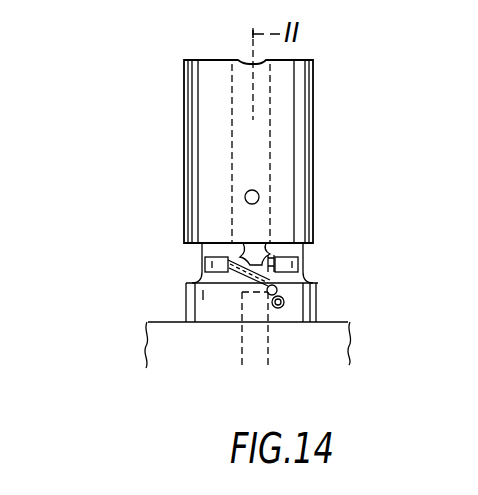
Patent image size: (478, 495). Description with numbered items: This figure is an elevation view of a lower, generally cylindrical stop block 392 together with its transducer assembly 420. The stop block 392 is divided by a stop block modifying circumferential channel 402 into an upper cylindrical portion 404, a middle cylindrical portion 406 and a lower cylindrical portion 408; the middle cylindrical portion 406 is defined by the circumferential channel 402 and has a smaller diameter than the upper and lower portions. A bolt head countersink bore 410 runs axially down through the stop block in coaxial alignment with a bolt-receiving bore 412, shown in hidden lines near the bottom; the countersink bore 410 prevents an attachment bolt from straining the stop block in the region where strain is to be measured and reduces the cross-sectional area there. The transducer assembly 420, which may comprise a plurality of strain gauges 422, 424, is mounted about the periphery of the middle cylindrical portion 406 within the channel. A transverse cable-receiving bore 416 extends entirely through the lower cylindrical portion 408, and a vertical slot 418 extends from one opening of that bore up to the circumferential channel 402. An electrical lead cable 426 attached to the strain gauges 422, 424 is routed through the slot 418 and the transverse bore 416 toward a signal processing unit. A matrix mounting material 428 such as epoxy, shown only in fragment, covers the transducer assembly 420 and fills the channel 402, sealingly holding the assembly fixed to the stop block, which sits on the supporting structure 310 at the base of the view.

The stop block 392 is at (339, 99).
The upper cylindrical portion 404 is at (313, 145).
The bolt head countersink bore 410 is at (232, 137).
The circumferential channel 402 is at (308, 255).
The strain gauge 424 is at (313, 237).
The matrix mounting material 428 is at (268, 243).
The transducer assembly 420 is at (182, 258).
The middle cylindrical portion 406 is at (300, 270).
The strain gauge 422 is at (182, 275).
The electrical lead cable 426 is at (315, 285).
The transverse cable-receiving bore 416 is at (312, 308).
The lower cylindrical portion 408 is at (316, 315).
The support surface 310 is at (145, 352).
The vertical slot 418 is at (270, 304).
The bolt-receiving bore 412 is at (262, 340).